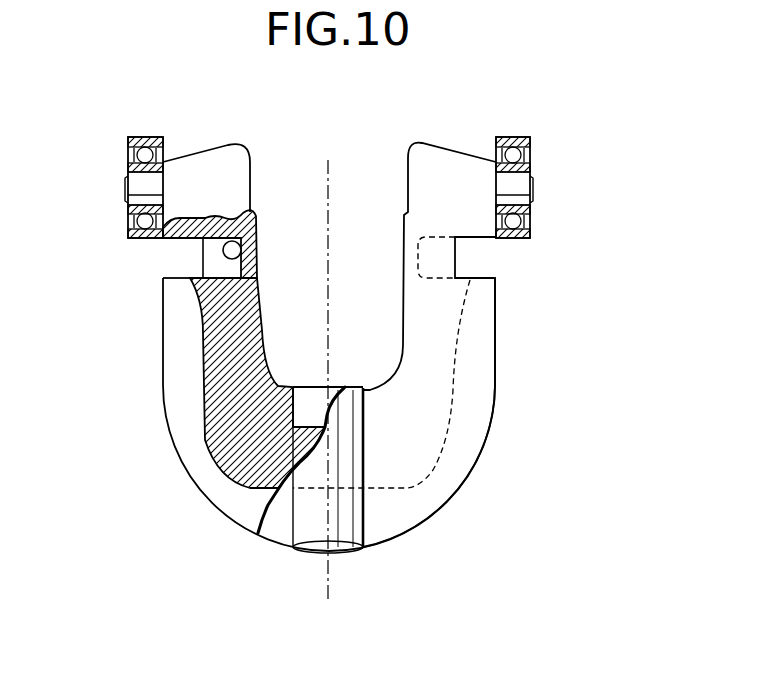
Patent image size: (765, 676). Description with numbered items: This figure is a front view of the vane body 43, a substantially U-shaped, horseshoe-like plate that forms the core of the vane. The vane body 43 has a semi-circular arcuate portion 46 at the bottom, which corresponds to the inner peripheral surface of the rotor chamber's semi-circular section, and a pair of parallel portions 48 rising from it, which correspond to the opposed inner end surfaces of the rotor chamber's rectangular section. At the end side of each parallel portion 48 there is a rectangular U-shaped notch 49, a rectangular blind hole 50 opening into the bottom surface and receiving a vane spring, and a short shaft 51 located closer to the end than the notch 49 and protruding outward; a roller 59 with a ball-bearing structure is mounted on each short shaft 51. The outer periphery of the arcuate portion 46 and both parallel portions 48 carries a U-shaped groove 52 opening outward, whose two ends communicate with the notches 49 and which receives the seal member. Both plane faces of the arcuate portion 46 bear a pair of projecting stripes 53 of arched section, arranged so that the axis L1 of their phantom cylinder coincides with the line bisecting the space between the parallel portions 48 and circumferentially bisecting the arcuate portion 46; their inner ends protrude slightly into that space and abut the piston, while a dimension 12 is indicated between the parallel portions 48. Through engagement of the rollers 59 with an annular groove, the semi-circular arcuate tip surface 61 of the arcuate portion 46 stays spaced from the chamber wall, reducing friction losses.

The gap dimension 12 is at (301, 352).
The vane body 43 is at (497, 383).
The semi-circular arcuate portion 46 is at (385, 520).
The parallel portions 48 is at (163, 347).
The U-shaped notch 49 is at (176, 240).
The blind hole 50 is at (240, 260).
The short shaft 51 is at (141, 186).
The U-shaped groove 52 is at (218, 490).
The projecting stripes 53 is at (333, 385).
The roller 59 is at (135, 137).
The semi-circular arcuate tip surface 61 is at (333, 550).
The axis L1 is at (328, 168).